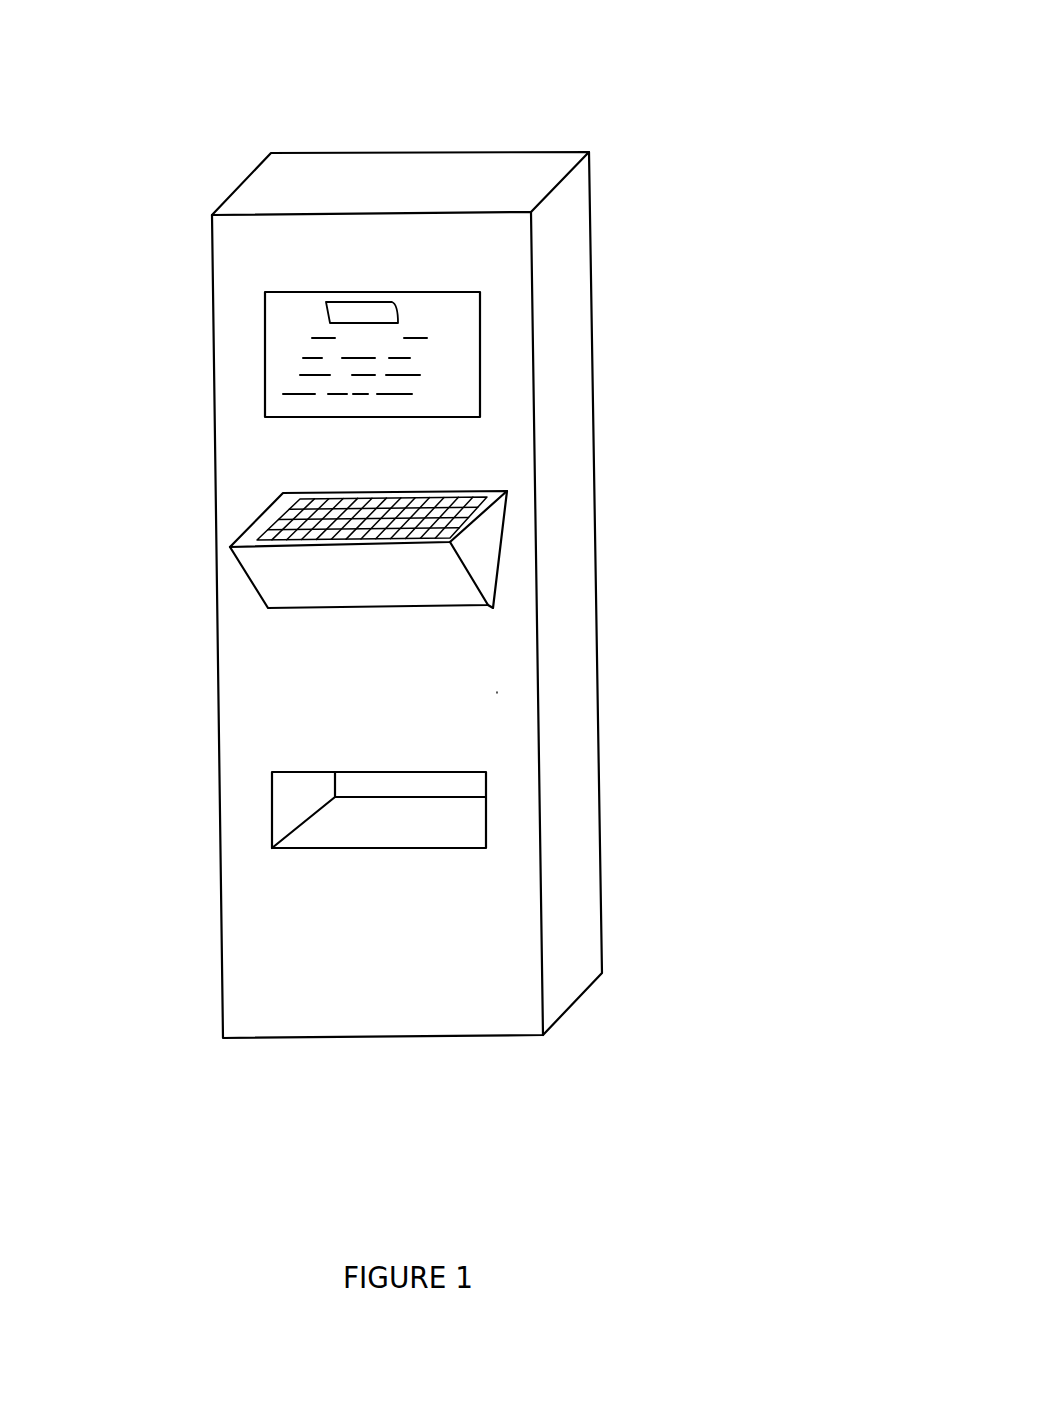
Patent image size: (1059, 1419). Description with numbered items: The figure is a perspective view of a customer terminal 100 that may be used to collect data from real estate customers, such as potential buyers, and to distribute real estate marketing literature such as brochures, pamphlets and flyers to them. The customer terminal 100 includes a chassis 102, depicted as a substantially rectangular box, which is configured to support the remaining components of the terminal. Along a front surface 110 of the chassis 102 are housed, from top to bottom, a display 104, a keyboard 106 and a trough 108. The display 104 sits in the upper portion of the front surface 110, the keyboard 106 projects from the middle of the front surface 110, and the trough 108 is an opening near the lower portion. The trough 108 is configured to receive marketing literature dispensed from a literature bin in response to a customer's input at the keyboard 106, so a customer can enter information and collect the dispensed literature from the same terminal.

The customer terminal 100 is at (713, 85).
The chassis 102 is at (558, 366).
The display 104 is at (285, 358).
The keyboard 106 is at (463, 512).
The trough 108 is at (457, 830).
The front surface 110 is at (497, 692).